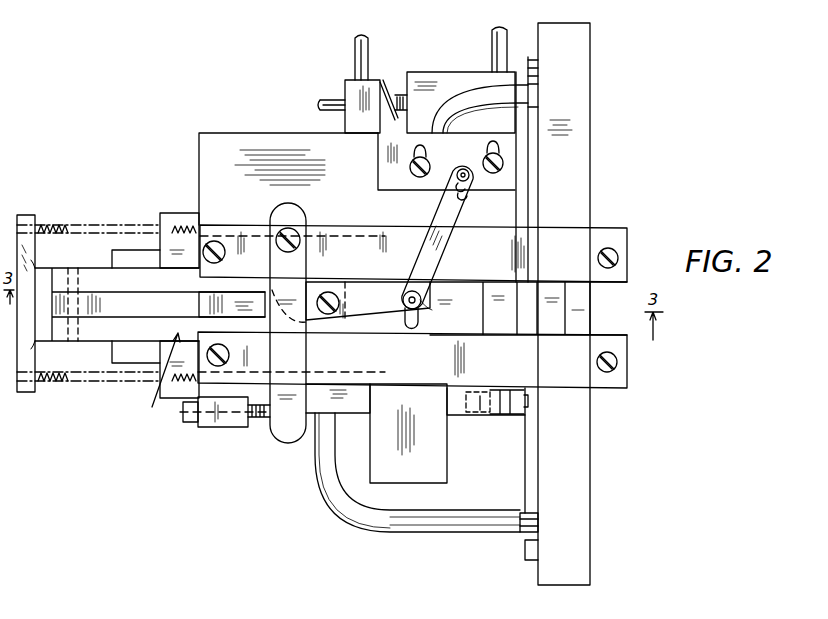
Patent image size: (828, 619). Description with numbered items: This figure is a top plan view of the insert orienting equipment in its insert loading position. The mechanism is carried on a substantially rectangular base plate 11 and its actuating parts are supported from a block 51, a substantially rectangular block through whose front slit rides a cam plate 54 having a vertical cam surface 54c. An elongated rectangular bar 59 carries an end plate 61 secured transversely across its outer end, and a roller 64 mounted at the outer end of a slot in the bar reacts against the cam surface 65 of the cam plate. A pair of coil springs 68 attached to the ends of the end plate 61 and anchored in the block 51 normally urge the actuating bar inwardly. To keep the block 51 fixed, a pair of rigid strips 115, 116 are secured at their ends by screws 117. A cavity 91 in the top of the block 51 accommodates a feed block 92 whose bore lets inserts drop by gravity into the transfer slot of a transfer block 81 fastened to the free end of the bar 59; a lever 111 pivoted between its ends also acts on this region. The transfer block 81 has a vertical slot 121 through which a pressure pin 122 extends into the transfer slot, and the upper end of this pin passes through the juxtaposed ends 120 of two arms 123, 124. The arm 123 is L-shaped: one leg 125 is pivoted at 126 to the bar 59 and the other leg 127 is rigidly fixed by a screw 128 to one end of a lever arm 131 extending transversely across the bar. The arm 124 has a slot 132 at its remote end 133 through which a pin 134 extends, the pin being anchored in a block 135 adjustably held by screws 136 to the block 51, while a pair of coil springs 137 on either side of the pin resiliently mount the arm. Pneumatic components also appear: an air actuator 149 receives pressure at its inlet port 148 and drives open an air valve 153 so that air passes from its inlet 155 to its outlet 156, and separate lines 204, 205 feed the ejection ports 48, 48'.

The base plate 11 is at (590, 514).
The ejection port 48 is at (511, 508).
The ejection port 48' is at (525, 65).
The block 51 is at (199, 150).
The cam plate 54 is at (94, 330).
The vertical cam surface 54c is at (265, 300).
The bar 59 is at (149, 374).
The end plate 61 is at (22, 392).
The roller 64 is at (63, 292).
The cam surface 65 is at (127, 312).
The coil springs 68 is at (66, 230).
The transfer block 81 is at (458, 290).
The cavity 91 is at (362, 416).
The feed block 92 is at (440, 472).
The lever 111 is at (492, 416).
The rigid strip 115 is at (574, 240).
The rigid strip 116 is at (560, 382).
The screws 117 is at (617, 364).
The juxtaposed ends 120 is at (390, 286).
The vertical slot 121 is at (410, 328).
The pressure pin 122 is at (422, 308).
The arm 123 is at (360, 277).
The arm 124 is at (432, 222).
The leg 125 is at (352, 328).
The pivot 126 is at (322, 292).
The leg 127 is at (266, 264).
The screw 128 is at (278, 233).
The lever arm 131 is at (276, 353).
The slot 132 is at (466, 192).
The end 133 is at (466, 158).
The pin 134 is at (470, 182).
The block 135 is at (378, 160).
The screws 136 is at (392, 164).
The coil springs 137 is at (460, 190).
The inlet port 148 is at (482, 64).
The air actuator 149 is at (452, 88).
The air valve 153 is at (352, 90).
The inlet 155 is at (378, 80).
The outlet 156 is at (316, 96).
The line 204 is at (370, 512).
The line 205 is at (464, 112).